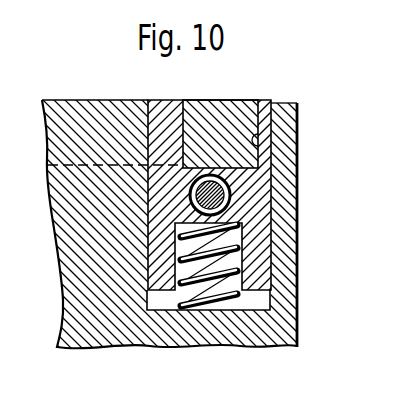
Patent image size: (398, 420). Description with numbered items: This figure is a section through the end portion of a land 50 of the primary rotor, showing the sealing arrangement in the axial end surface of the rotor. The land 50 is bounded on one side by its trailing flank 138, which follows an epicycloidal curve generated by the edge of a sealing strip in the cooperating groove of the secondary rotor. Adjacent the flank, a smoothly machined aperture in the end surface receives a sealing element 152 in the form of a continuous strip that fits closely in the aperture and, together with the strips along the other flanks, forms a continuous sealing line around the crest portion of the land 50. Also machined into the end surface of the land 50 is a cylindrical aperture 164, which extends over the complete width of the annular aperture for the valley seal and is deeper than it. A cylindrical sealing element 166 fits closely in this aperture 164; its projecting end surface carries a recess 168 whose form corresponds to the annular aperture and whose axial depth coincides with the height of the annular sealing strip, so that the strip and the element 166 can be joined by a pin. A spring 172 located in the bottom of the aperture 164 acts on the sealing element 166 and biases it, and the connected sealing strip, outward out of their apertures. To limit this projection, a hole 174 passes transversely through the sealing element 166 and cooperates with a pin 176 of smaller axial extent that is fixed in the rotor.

The land 50 is at (80, 300).
The trailing flank 138 is at (299, 105).
The sealing element 152 is at (201, 103).
The cylindrical aperture 164 is at (263, 297).
The cylindrical sealing element 166 is at (258, 238).
The recess 168 is at (258, 140).
The compression spring 172 is at (190, 306).
The hole 174 is at (224, 178).
The pin 176 is at (231, 194).